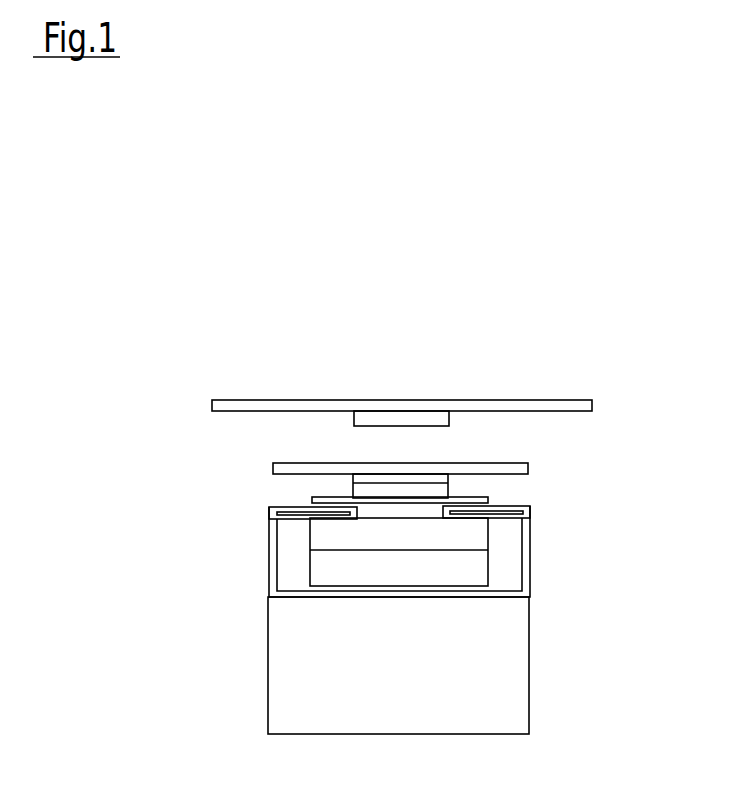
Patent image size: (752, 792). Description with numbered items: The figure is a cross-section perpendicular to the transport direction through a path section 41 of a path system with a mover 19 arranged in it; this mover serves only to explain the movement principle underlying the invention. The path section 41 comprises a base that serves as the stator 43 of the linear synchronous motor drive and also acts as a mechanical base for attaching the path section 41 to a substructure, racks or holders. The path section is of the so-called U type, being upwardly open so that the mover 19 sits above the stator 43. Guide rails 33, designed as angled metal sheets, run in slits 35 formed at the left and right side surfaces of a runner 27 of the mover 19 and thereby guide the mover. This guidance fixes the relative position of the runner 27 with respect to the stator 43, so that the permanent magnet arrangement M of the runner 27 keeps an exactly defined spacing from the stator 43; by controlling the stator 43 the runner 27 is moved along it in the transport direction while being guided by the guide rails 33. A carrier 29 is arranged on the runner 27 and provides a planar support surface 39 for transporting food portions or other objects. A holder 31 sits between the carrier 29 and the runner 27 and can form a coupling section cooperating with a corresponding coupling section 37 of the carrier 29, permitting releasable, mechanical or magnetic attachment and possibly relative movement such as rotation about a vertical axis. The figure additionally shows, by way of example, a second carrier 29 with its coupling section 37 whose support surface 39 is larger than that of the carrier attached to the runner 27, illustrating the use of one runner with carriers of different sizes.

The mover 19 is at (565, 468).
The runner 27 is at (505, 536).
The carrier 29 is at (548, 406).
The holder 31 is at (368, 491).
The guide rails 33 is at (270, 553).
The slits 35 is at (292, 500).
The coupling section 37 is at (447, 420).
The support surface 39 is at (334, 392).
The path section 41 is at (202, 611).
The stator 43 is at (512, 703).